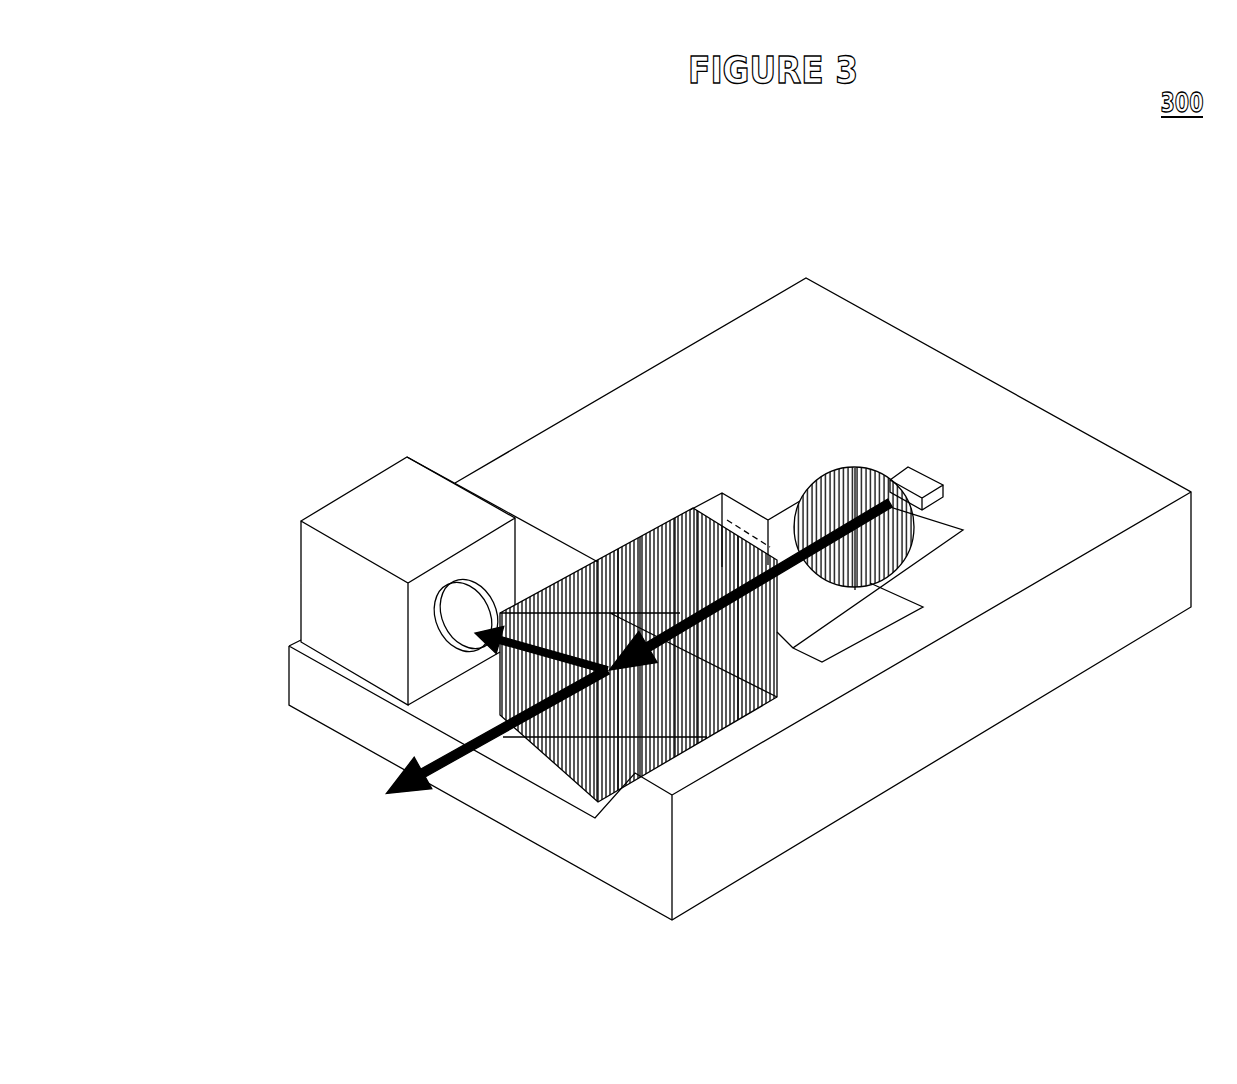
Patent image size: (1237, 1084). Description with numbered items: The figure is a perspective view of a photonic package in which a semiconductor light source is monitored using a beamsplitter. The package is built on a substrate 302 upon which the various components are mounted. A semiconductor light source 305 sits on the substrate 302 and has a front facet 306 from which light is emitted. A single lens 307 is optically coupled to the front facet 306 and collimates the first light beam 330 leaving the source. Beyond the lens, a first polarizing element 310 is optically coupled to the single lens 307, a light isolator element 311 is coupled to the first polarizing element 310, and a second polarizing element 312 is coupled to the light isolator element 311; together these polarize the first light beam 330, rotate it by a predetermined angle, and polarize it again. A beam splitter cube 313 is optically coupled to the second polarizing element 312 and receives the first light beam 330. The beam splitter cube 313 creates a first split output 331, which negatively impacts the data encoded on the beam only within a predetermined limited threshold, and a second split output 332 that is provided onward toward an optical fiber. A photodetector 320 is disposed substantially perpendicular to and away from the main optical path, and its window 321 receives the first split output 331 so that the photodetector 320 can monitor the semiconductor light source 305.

The substrate 302 is at (1058, 420).
The semiconductor light source 305 is at (923, 467).
The front facet 306 is at (897, 477).
The single lens 307 is at (847, 470).
The first polarizing element 310 is at (692, 507).
The light isolator element 311 is at (658, 530).
The second polarizing element 312 is at (630, 533).
The beam splitter cube 313 is at (608, 590).
The photodetector 320 is at (347, 537).
The window 321 is at (473, 582).
The first light beam 330 is at (835, 530).
The first split output 331 is at (500, 634).
The second split output 332 is at (455, 757).